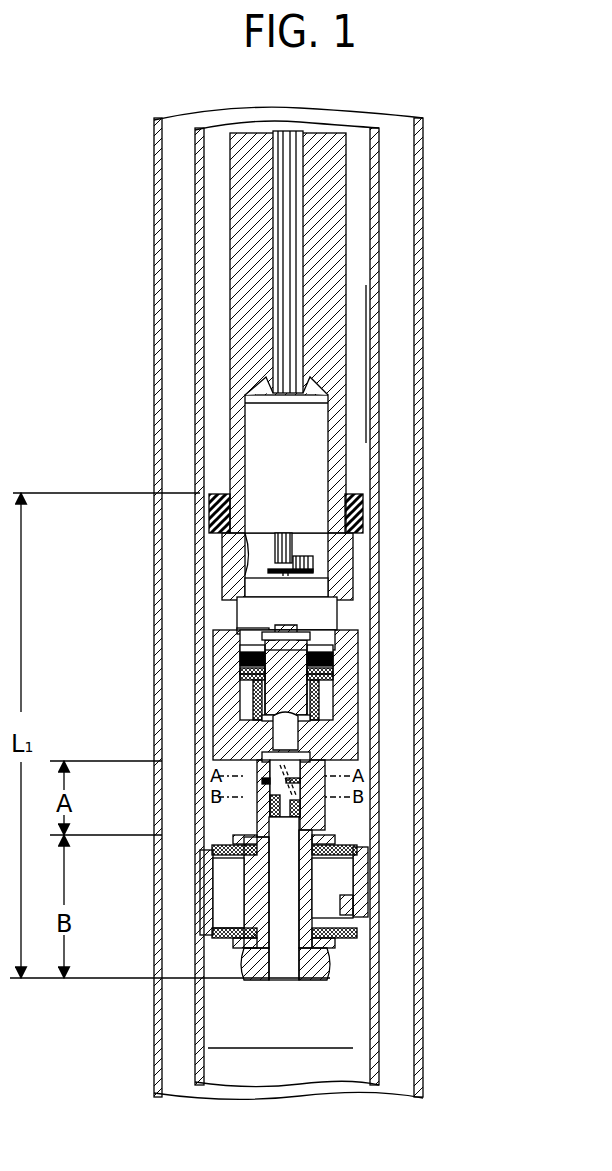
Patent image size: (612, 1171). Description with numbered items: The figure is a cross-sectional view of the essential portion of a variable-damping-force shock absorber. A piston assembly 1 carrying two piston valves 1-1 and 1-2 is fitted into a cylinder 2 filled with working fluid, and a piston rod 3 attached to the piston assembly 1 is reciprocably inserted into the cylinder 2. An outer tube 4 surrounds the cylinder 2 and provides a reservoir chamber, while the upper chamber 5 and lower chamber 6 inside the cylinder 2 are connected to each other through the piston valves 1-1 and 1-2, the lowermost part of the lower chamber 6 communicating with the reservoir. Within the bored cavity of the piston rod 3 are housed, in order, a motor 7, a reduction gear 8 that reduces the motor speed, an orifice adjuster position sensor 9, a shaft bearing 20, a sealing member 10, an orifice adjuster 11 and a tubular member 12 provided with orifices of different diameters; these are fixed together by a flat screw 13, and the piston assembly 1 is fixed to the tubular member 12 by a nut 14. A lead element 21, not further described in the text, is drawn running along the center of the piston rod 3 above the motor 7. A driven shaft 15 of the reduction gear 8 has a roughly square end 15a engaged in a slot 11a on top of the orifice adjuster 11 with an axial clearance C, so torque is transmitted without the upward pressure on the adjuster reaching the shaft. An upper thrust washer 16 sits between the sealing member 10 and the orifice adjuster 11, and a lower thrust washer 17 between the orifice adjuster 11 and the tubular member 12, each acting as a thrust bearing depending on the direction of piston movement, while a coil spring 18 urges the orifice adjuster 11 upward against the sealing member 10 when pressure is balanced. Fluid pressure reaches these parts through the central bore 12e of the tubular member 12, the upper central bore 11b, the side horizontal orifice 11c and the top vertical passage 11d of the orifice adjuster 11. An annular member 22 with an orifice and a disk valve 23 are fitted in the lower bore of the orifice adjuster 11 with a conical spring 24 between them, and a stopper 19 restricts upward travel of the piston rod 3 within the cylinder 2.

The piston assembly 1 is at (360, 870).
The piston valve 1-1 is at (352, 845).
The piston valve 1-2 is at (212, 958).
The cylinder 2 is at (381, 180).
The piston rod 3 is at (333, 272).
The outer tube 4 is at (424, 228).
The upper chamber 5 is at (370, 357).
The lower chamber 6 is at (355, 1005).
The motor 7 is at (313, 462).
The reduction gear 8 is at (306, 558).
The orifice adjuster position sensor 9 is at (328, 592).
The sealing member 10 is at (305, 642).
The orifice adjuster 11 is at (320, 665).
The slot 11a is at (340, 622).
The upper central bore 11b is at (335, 737).
The side horizontal orifice 11c is at (262, 732).
The top vertical passage 11d is at (245, 652).
The tubular member 12 is at (340, 692).
The central bore 12e is at (330, 905).
The flat screw 13 is at (300, 748).
The nut 14 is at (330, 965).
The driven shaft 15 is at (285, 604).
The square shape 15a is at (240, 633).
The upper thrust washer 16 is at (250, 668).
The lower thrust washer 17 is at (255, 688).
The coil spring 18 is at (258, 712).
The stopper 19 is at (363, 512).
The shaft bearing 20 is at (320, 618).
The control rod 21 is at (278, 340).
The annular member 22 is at (300, 815).
The disk valve 23 is at (262, 828).
The conical spring 24 is at (265, 760).
The clearance C is at (335, 630).